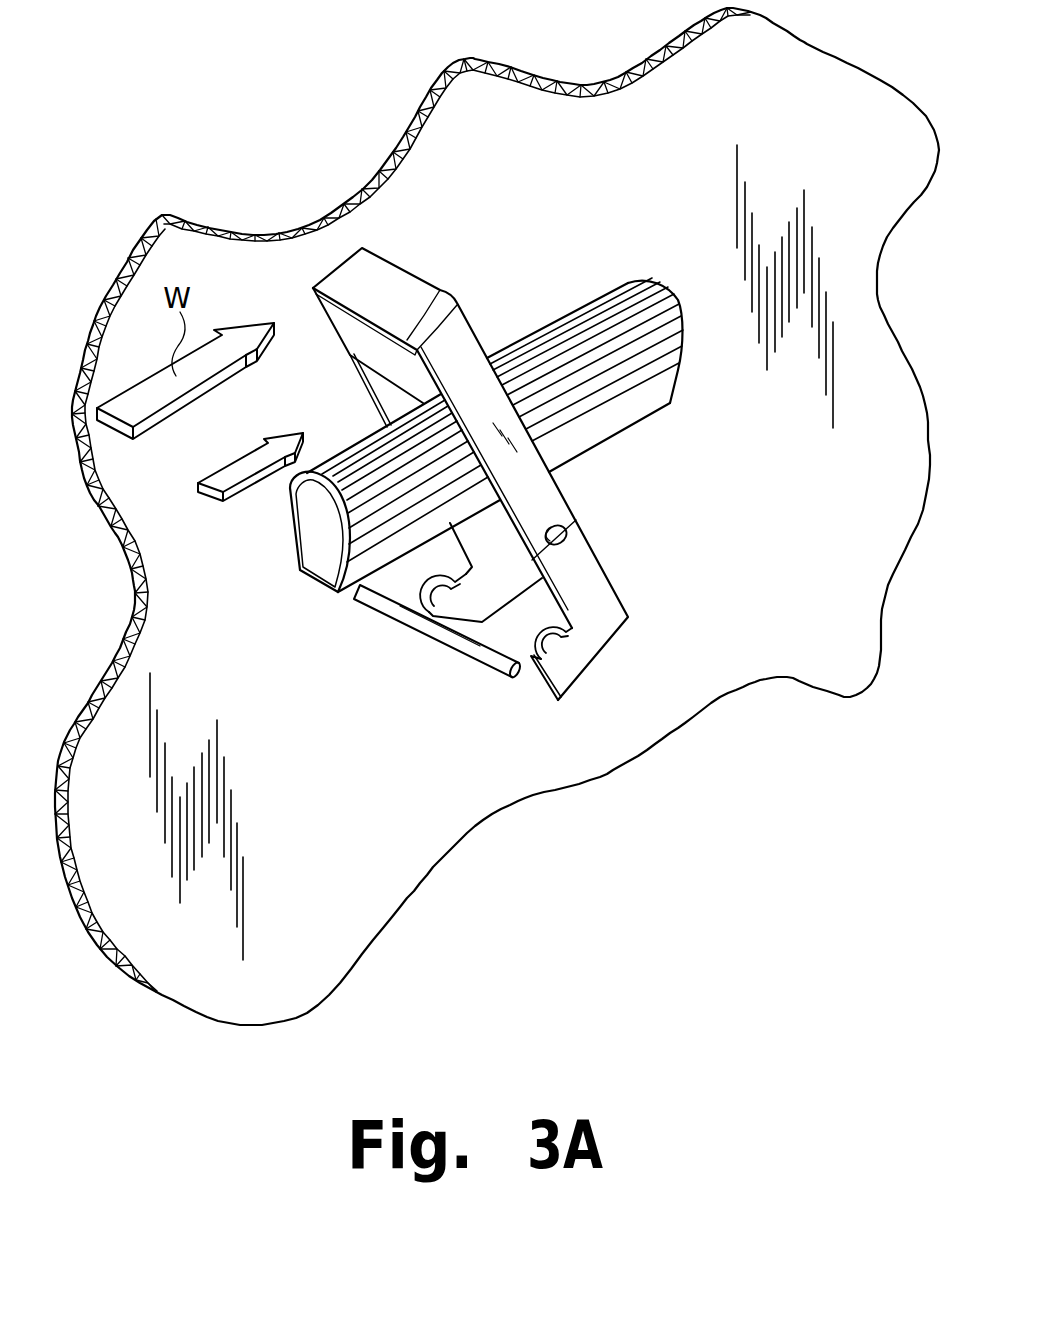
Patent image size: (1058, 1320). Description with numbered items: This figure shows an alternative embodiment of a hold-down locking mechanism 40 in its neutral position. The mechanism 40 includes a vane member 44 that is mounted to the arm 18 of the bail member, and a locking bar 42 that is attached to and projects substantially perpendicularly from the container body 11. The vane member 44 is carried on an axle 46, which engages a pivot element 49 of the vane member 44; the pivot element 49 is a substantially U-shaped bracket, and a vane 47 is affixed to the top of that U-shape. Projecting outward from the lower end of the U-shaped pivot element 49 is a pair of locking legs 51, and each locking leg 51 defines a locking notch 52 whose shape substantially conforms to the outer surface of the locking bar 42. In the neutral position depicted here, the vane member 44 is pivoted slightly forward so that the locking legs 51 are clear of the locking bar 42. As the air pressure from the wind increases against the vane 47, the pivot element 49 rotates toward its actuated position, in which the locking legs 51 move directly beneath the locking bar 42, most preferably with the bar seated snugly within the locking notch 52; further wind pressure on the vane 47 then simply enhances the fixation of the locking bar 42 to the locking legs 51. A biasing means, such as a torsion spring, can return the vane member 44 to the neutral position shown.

The container body 11 is at (806, 62).
The arm 18 is at (635, 282).
The hold-down locking mechanism 40 is at (477, 619).
The locking bar 42 is at (470, 648).
The vane member 44 is at (480, 463).
The axle 46 is at (562, 535).
The vane 47 is at (352, 355).
The pivot element 49 is at (577, 558).
The locking legs 51 is at (477, 597).
The locking notch 52 is at (434, 611).